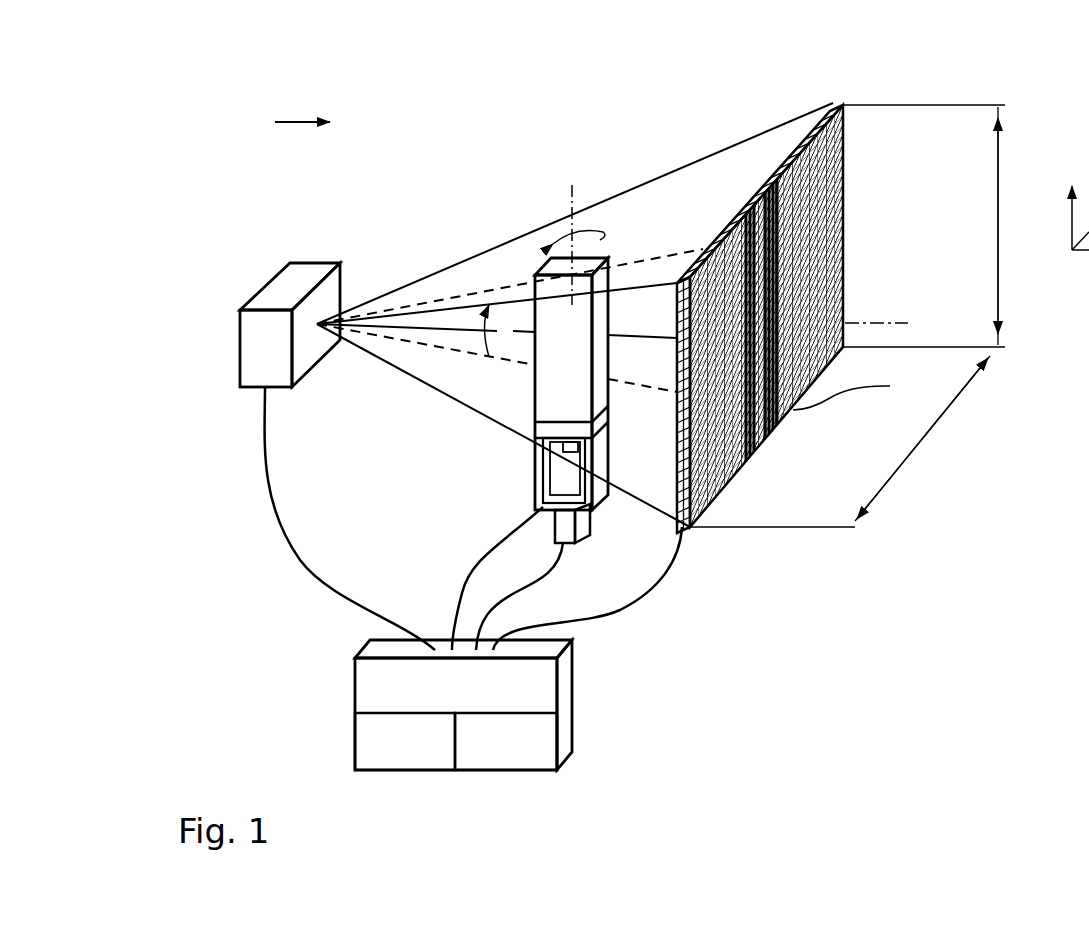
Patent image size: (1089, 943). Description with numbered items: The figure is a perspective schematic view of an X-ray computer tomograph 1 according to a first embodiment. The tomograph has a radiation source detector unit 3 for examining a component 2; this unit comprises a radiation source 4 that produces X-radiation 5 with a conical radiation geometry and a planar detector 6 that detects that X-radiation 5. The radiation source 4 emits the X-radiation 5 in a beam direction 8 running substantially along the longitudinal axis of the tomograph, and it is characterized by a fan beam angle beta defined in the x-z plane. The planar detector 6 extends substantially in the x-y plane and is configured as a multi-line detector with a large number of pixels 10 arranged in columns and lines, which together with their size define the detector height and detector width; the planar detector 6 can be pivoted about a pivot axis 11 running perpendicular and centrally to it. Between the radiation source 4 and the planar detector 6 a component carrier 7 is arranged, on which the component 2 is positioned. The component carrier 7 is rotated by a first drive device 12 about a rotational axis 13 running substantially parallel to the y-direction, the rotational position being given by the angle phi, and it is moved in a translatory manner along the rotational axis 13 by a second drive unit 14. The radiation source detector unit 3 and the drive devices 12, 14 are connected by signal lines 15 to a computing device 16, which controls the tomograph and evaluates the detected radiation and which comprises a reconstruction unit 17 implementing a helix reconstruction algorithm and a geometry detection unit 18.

The X-ray computer tomograph 1 is at (542, 180).
The component 2 is at (537, 265).
The radiation source detector unit 3 is at (309, 237).
The radiation source 4 is at (275, 263).
The X-radiation 5 is at (457, 262).
The planar detector 6 is at (856, 158).
The component carrier 7 is at (543, 430).
The beam direction 8 is at (306, 122).
The pixels 10 is at (695, 522).
The pivot axis 11 is at (858, 323).
The first drive device 12 is at (582, 468).
The rotational axis 13 is at (572, 205).
The second drive unit 14 is at (540, 529).
The signal lines 15 is at (265, 512).
The computing device 16 is at (565, 705).
The reconstruction unit 17 is at (357, 735).
The geometry detection unit 18 is at (535, 748).